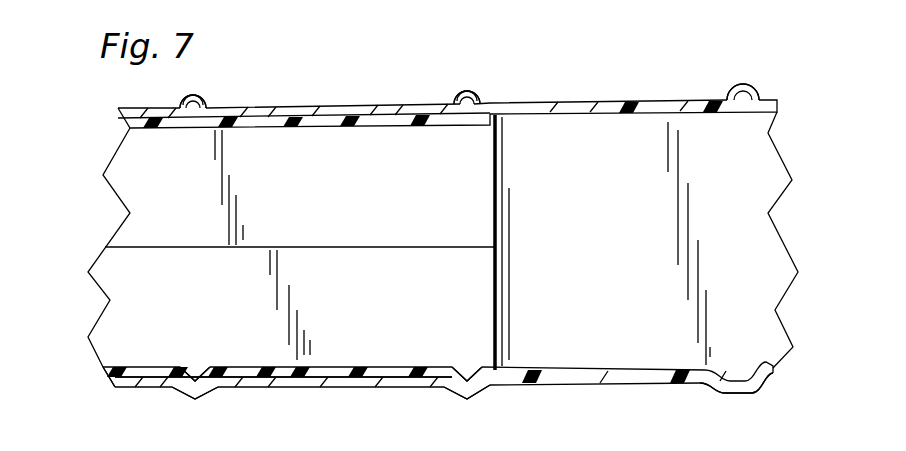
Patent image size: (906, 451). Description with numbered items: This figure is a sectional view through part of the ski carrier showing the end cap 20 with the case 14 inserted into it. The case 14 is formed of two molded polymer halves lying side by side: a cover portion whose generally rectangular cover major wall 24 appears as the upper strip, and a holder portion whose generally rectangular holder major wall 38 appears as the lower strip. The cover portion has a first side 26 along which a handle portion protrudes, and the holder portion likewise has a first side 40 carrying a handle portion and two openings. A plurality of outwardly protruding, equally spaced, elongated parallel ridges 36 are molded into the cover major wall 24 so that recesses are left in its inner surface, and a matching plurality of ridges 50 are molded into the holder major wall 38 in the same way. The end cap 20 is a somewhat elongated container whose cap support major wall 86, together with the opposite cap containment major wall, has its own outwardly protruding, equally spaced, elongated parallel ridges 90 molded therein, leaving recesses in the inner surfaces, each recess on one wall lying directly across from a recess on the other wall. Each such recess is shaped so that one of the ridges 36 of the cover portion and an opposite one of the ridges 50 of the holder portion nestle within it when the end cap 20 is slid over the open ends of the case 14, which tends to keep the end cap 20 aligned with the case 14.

The case 14 is at (92, 365).
The end cap 20 is at (668, 94).
The cover major wall 24 is at (133, 122).
The first side 26 is at (150, 152).
The ridges 36 is at (193, 104).
The holder major wall 38 is at (140, 388).
The first side 40 is at (140, 300).
The ridges 50 is at (192, 366).
The cap support major wall 86 is at (290, 382).
The ridges 90 is at (200, 99).